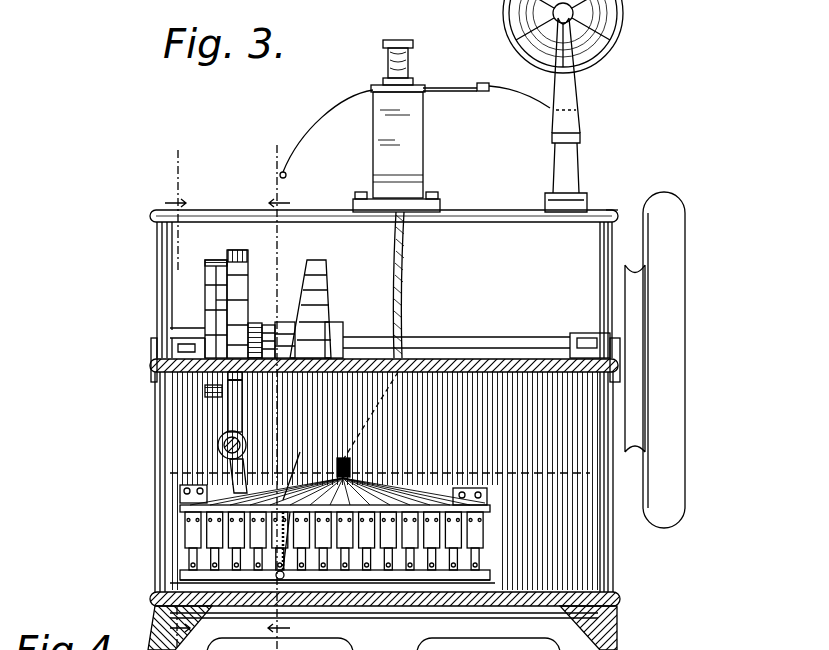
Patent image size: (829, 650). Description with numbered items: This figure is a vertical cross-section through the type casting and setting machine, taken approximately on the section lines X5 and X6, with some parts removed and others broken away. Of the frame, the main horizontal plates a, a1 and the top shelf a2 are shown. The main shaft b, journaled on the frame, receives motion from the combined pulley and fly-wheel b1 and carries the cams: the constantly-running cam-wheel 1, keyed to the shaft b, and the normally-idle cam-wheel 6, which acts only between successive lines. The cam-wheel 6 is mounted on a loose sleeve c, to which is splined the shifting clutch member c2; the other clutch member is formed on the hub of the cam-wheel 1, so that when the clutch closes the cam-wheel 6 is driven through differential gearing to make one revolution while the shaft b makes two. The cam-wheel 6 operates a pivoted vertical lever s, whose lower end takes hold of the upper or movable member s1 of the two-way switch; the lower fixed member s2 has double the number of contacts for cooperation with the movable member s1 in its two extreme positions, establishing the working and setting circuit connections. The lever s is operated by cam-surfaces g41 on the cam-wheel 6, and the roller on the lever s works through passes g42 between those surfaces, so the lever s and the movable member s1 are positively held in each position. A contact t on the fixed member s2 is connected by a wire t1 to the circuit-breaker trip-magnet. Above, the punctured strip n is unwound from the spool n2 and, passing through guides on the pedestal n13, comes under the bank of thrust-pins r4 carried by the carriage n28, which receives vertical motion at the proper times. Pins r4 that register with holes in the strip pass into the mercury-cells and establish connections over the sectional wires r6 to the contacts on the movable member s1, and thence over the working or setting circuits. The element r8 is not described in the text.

The main horizontal plate a is at (155, 367).
The main horizontal plate a1 is at (152, 597).
The top shelf a2 is at (602, 217).
The main shaft b is at (482, 347).
The combined pulley and fly-wheel b1 is at (680, 381).
The spool n2 is at (613, 43).
The pedestal n13 is at (418, 153).
The thrust-pins r4 is at (390, 62).
The carriage n28 is at (414, 82).
The strip n is at (308, 144).
The section line X5 is at (174, 400).
The section line X6 is at (275, 397).
The cam-surfaces g41 is at (283, 243).
The passes g42 is at (228, 250).
The normally-idle cam-wheel 6 is at (240, 310).
The shifting clutch member c2 is at (265, 325).
The loose sleeve c is at (273, 347).
The constantly-running cam-wheel 1 is at (317, 315).
The switch-lever s is at (232, 412).
The movable member of the two-way switch s1 is at (182, 523).
The fixed member of the two-way switch s2 is at (187, 577).
The spreader r8 is at (400, 497).
The sectional wires r6 is at (295, 466).
The contact t is at (273, 573).
The wire t1 is at (287, 567).